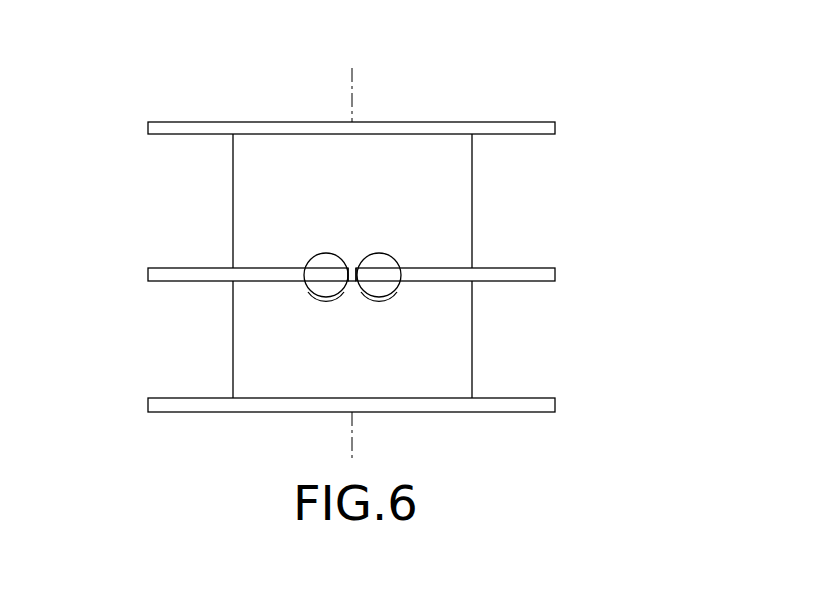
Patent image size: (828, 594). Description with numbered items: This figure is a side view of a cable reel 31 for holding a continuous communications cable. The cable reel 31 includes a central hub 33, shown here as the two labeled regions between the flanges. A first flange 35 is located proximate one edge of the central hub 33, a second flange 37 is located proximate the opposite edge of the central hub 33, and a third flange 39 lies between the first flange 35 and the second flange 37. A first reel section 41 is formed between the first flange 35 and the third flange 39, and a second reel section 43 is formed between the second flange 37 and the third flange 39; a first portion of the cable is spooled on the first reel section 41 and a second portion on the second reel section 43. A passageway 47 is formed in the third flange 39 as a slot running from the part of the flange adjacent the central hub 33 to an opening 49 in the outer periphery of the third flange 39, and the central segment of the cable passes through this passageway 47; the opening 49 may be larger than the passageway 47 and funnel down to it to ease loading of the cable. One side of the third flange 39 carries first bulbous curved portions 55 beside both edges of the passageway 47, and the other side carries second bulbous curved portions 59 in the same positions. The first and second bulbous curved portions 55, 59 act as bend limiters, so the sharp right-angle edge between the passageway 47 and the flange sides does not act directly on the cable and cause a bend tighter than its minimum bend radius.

The cable reel 31 is at (375, 258).
The central hub 33 is at (368, 169).
The first flange 35 is at (499, 122).
The second flange 37 is at (525, 413).
The third flange 39 is at (528, 282).
The first reel section 41 is at (158, 198).
The second reel section 43 is at (158, 344).
The passageway 47 is at (348, 300).
The opening 49 is at (353, 266).
The first bulbous curved portions 55 is at (311, 258).
The second bulbous curved portions 59 is at (313, 292).